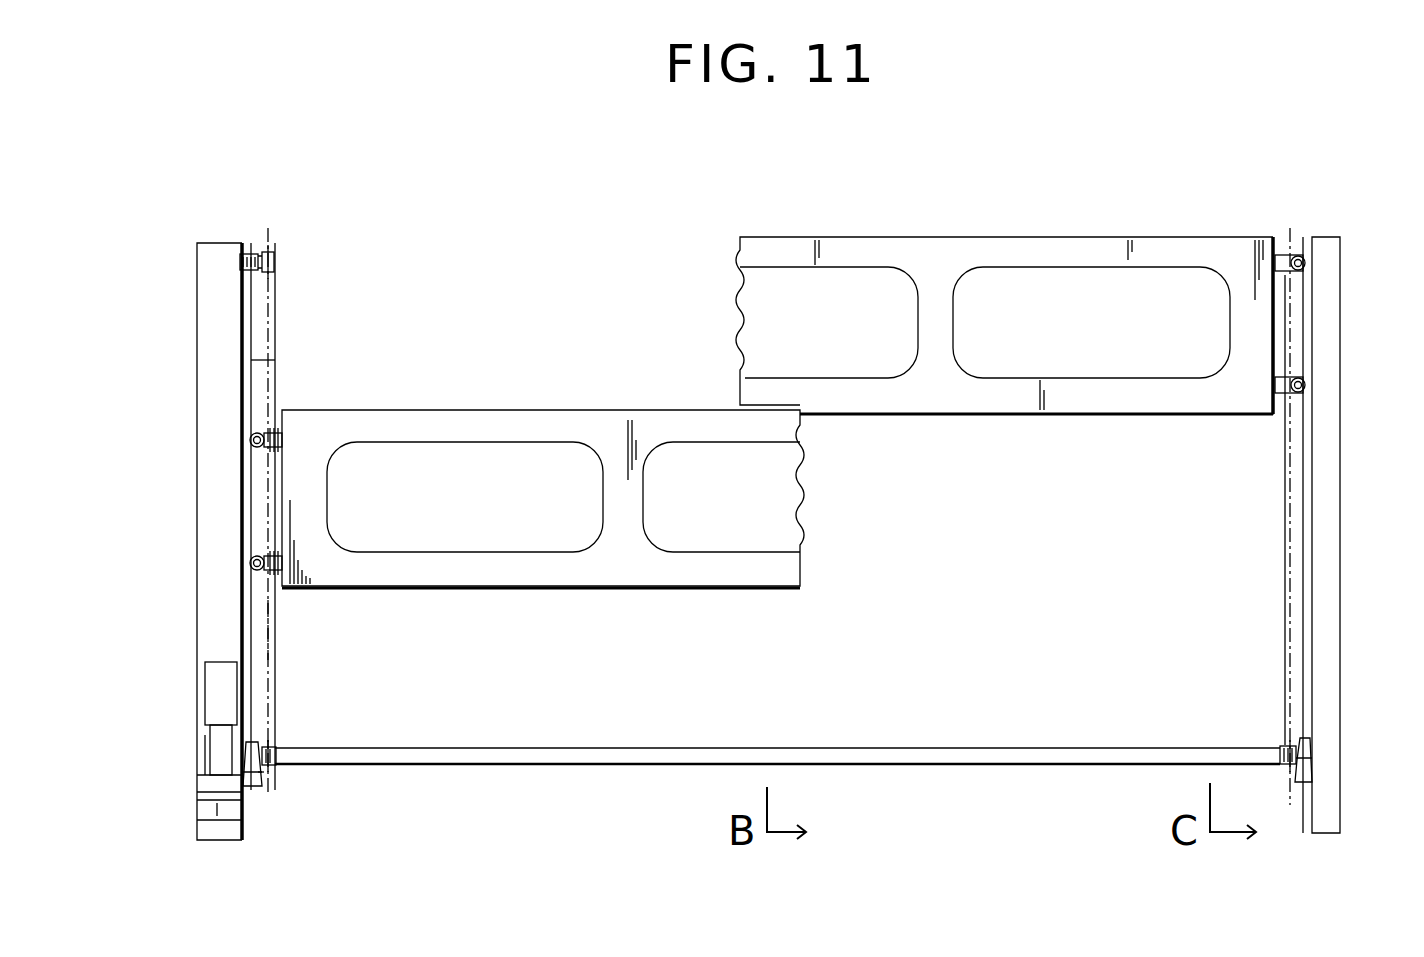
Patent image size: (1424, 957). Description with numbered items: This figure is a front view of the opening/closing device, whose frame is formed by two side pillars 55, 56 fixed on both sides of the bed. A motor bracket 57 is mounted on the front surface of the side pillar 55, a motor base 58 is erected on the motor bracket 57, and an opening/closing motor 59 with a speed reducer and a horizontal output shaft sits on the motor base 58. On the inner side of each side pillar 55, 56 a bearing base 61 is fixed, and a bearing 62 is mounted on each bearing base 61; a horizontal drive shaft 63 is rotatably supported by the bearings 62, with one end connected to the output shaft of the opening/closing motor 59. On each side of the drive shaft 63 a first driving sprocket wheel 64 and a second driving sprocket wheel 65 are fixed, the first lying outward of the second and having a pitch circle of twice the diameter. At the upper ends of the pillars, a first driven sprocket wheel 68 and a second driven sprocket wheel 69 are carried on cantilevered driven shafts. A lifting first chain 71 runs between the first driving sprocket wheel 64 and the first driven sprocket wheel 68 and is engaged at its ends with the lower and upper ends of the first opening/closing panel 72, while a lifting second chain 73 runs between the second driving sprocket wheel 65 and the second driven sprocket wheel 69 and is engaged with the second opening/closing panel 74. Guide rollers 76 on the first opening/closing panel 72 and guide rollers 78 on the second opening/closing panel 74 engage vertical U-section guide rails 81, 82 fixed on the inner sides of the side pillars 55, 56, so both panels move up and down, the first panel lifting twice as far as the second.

The side pillar 55 is at (197, 366).
The side pillar 56 is at (1328, 318).
The motor bracket 57 is at (197, 814).
The motor base 58 is at (205, 777).
The opening/closing motor 59 is at (205, 698).
The bearing base 61 is at (262, 778).
The bearing 62 is at (263, 742).
The drive shaft 63 is at (890, 746).
The first driving sprocket wheel 64 is at (266, 775).
The second driving sprocket wheel 65 is at (274, 740).
The first driven sprocket wheel 68 is at (262, 248).
The second driven sprocket wheel 69 is at (274, 250).
The lifting first chain 71 is at (262, 494).
The first opening/closing panel 72 is at (1090, 236).
The lifting second chain 73 is at (275, 622).
The second opening/closing panel 74 is at (525, 408).
The guide roller 76 is at (1302, 296).
The guide roller 78 is at (250, 441).
The guide rail 81 is at (240, 362).
The guide rail 82 is at (1294, 256).